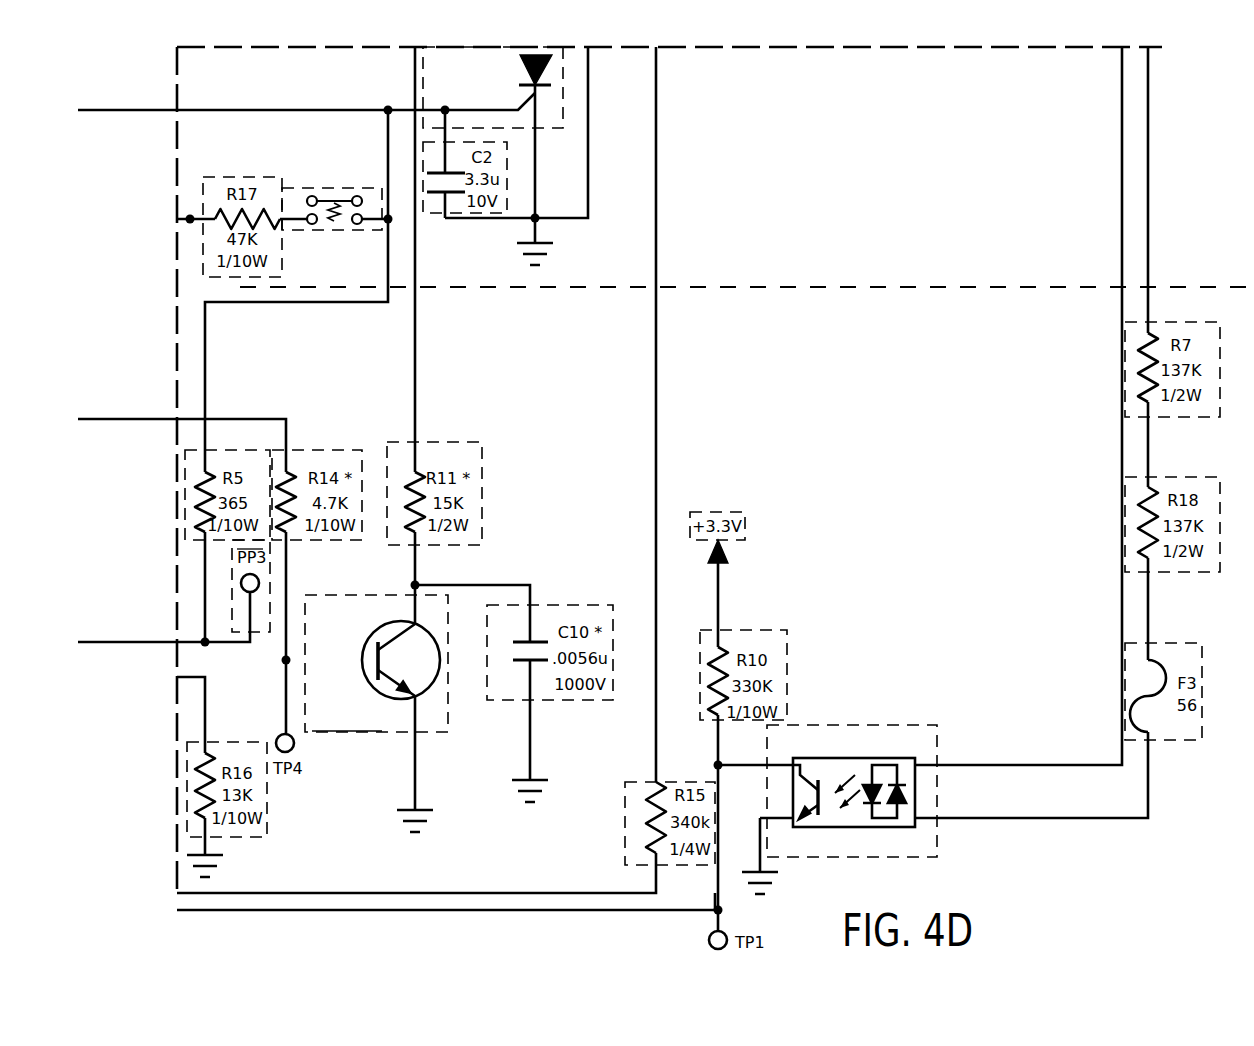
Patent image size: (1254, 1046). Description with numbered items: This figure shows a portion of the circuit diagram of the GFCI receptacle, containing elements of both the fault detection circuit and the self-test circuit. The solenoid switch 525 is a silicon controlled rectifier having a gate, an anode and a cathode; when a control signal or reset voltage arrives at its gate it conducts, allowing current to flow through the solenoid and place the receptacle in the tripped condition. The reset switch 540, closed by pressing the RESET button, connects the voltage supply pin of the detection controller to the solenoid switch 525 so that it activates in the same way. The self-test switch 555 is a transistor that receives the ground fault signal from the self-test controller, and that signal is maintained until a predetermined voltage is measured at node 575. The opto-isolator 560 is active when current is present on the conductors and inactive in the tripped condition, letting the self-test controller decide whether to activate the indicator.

The solenoid switch 525 is at (548, 66).
The reset switch 540 is at (344, 243).
The self-test switch 555 is at (402, 700).
The opto-isolator 560 is at (865, 757).
The node 575 is at (388, 108).